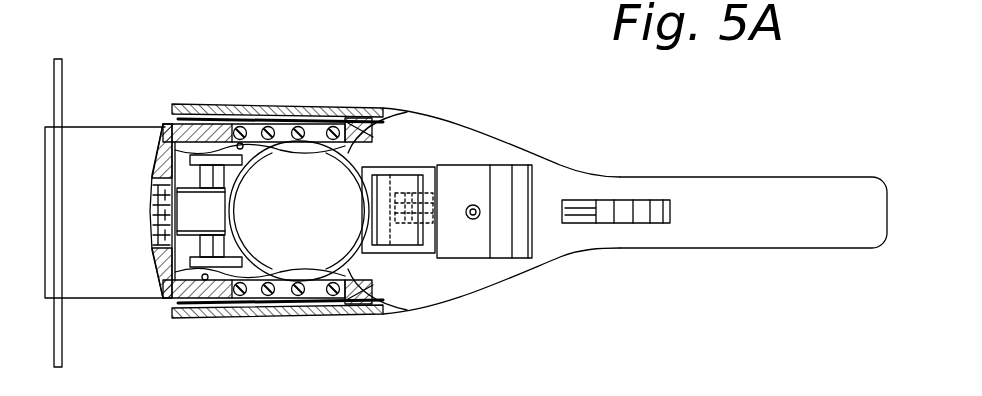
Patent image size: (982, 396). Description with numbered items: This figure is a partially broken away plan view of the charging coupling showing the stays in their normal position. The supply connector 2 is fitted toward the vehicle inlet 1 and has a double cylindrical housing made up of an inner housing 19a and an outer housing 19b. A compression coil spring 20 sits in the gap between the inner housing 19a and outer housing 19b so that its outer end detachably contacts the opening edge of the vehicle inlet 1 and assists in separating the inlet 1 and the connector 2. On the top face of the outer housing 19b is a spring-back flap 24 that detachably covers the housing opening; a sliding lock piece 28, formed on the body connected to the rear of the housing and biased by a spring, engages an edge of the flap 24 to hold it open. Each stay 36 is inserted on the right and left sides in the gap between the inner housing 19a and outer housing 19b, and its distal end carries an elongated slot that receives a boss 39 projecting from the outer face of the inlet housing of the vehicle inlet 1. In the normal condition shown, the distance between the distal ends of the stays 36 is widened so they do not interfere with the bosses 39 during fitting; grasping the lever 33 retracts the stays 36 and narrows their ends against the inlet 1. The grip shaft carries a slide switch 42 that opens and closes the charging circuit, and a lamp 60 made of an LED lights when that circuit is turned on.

The vehicle inlet 1 is at (95, 276).
The supply connector 2 is at (411, 317).
The inner housing 19a is at (313, 130).
The outer housing 19b is at (335, 108).
The compression coil spring 20 is at (270, 313).
The spring-back flap 24 is at (348, 172).
The lock piece 28 is at (483, 250).
The lever 33 is at (822, 237).
The stay 36 is at (272, 126).
The boss 39 is at (178, 104).
The slide switch 42 is at (625, 217).
The lamp 60 is at (474, 204).